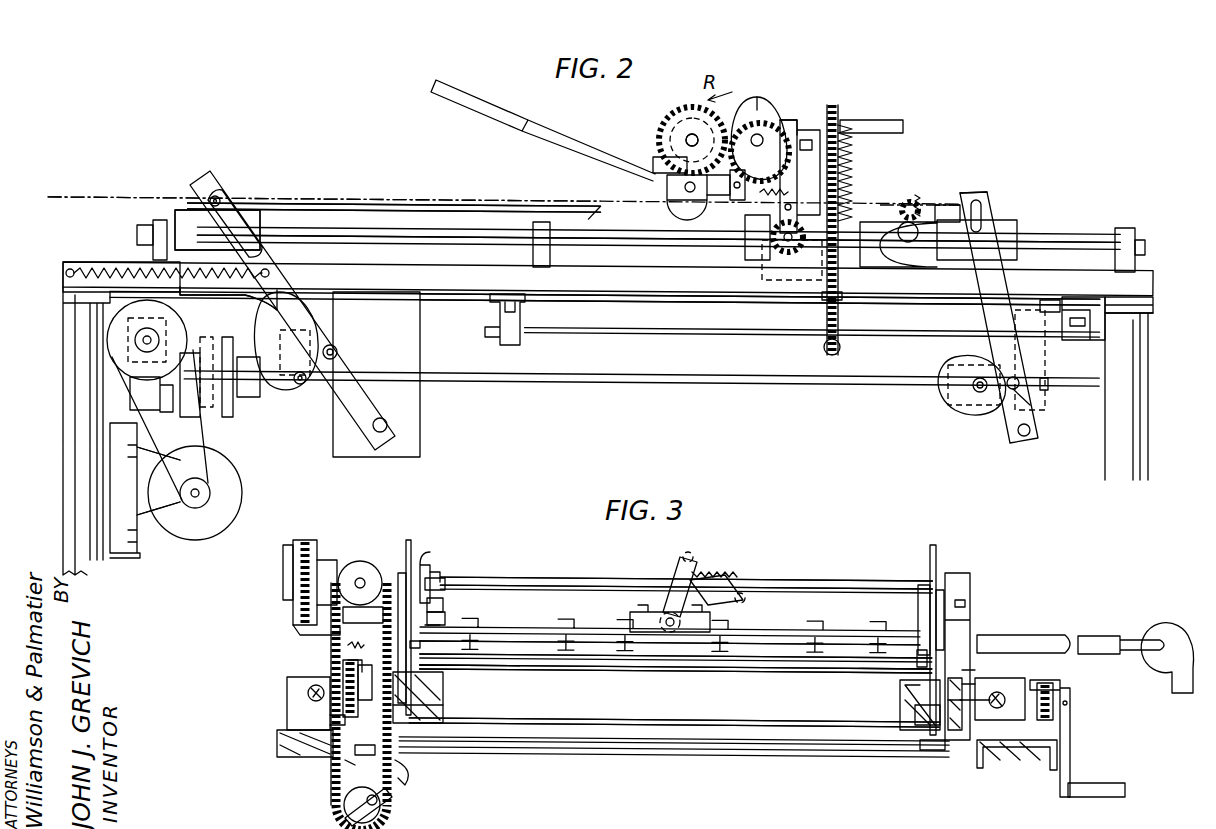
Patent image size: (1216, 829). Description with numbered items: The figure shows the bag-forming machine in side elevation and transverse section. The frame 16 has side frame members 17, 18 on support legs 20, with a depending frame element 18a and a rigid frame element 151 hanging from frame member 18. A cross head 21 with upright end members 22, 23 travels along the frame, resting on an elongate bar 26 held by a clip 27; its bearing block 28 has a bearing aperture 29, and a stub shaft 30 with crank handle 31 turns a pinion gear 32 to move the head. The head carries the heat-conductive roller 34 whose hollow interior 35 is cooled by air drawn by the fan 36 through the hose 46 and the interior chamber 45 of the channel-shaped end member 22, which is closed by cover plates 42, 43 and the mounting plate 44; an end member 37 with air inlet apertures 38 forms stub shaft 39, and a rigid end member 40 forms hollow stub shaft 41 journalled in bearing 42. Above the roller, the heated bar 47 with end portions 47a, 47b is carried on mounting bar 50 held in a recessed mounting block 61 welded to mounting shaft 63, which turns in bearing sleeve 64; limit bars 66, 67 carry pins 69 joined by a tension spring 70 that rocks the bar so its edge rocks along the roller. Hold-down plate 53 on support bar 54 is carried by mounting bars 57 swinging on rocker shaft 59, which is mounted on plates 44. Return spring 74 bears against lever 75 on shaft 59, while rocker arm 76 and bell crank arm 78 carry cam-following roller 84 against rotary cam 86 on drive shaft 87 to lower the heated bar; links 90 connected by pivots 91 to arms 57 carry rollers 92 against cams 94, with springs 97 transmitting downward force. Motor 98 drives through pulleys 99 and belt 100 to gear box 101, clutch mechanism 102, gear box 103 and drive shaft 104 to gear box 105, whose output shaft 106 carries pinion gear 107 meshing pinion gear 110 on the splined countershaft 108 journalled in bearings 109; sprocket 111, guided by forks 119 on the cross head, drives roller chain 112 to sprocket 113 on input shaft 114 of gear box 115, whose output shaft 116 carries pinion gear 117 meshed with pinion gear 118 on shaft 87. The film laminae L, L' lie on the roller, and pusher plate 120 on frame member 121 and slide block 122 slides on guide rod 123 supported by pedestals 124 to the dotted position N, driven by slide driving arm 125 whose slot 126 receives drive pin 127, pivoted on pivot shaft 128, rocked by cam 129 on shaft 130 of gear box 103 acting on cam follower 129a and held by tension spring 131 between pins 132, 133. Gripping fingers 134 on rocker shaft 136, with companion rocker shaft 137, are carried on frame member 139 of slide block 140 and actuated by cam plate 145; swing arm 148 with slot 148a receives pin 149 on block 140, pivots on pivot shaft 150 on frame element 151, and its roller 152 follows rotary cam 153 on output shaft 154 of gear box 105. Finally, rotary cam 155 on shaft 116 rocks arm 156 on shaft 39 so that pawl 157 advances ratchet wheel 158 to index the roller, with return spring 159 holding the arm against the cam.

In FIG. 2, the frame 16 is at (1163, 308).
In FIG. 3, the side frame member 17 is at (985, 766).
In FIG. 2, the side frame member 18 is at (640, 278).
In FIG. 3, the side frame member 18 is at (278, 745).
In FIG. 2, the depending frame element 18a is at (420, 400).
In FIG. 2, the support legs 20 is at (78, 412).
In FIG. 3, the cross head 21 is at (666, 752).
In FIG. 3, the upright end member 22 is at (950, 750).
In FIG. 3, the upright end member 23 is at (373, 682).
In FIG. 3, the elongate bar 26 is at (366, 744).
In FIG. 3, the clip 27 is at (352, 771).
In FIG. 3, the bearing block 28 is at (1022, 684).
In FIG. 3, the bearing aperture 29 is at (1003, 694).
In FIG. 3, the stub shaft 30 is at (1032, 705).
In FIG. 3, the crank handle 31 is at (1092, 792).
In FIG. 3, the pinion gear 32 is at (1050, 686).
In FIG. 3, the cylindrical roller 34 is at (674, 712).
In FIG. 3, the hollow interior 35 is at (900, 706).
In FIG. 3, the fan 36 is at (1188, 640).
In FIG. 3, the end member 37 is at (440, 697).
In FIG. 3, the air inlet apertures 38 is at (440, 712).
In FIG. 2, the stub shaft 39 is at (772, 237).
In FIG. 3, the stub shaft 39 is at (343, 680).
In FIG. 3, the rigid end member 40 is at (925, 727).
In FIG. 3, the hollow stub shaft 41 is at (970, 701).
In FIG. 3, the bearing 42 is at (956, 678).
In FIG. 3, the cover plate 43 is at (976, 669).
In FIG. 2, the mounting plate 44 is at (655, 165).
In FIG. 3, the mounting plate 44 is at (998, 624).
In FIG. 3, the interior chamber 45 is at (976, 683).
In FIG. 3, the air conduit 46 is at (1094, 639).
In FIG. 3, the heated bar 47 is at (692, 666).
In FIG. 3, the end portion 47a is at (872, 672).
In FIG. 3, the end portion 47b is at (456, 662).
In FIG. 3, the mounting bar 50 is at (842, 637).
In FIG. 3, the hold-down plate 53 is at (596, 669).
In FIG. 3, the support bar 54 is at (776, 670).
In FIG. 2, the mounting bar 57 is at (705, 196).
In FIG. 3, the mounting bar 57 is at (918, 656).
In FIG. 2, the rocker shaft 59 is at (675, 189).
In FIG. 3, the recessed mounting block 61 is at (628, 620).
In FIG. 3, the mounting shaft 63 is at (680, 630).
In FIG. 3, the tubular bearing sleeve 64 is at (658, 630).
In FIG. 3, the limit bar 66 is at (672, 580).
In FIG. 3, the limit bar 67 is at (738, 582).
In FIG. 3, the pins 69 is at (689, 555).
In FIG. 3, the tension spring 70 is at (708, 570).
In FIG. 2, the return spring 74 is at (850, 158).
In FIG. 2, the lever 75 is at (896, 121).
In FIG. 3, the rocker arm 76 is at (436, 626).
In FIG. 3, the bell crank arm 78 is at (442, 604).
In FIG. 3, the cam-following roller 84 is at (440, 583).
In FIG. 3, the rotary cam 86 is at (436, 572).
In FIG. 2, the drive shaft 87 is at (694, 146).
In FIG. 3, the drive shaft 87 is at (832, 576).
In FIG. 2, the cam roller-mounting link 90 is at (733, 200).
In FIG. 3, the cam roller-mounting link 90 is at (431, 560).
In FIG. 3, the pivot 91 is at (420, 645).
In FIG. 3, the cam following roller 92 is at (400, 572).
In FIG. 3, the cam 94 is at (411, 546).
In FIG. 3, the spring 97 is at (446, 615).
In FIG. 2, the motor 98 is at (238, 472).
In FIG. 2, the pulleys 99 is at (148, 345).
In FIG. 2, the belt 100 is at (200, 416).
In FIG. 2, the gear box 101 is at (152, 410).
In FIG. 2, the clutch mechanism 102 is at (205, 326).
In FIG. 2, the second gear box 103 is at (243, 386).
In FIG. 2, the elongate drive shaft 104 is at (718, 380).
In FIG. 2, the gear box 105 is at (965, 415).
In FIG. 2, the output drive shaft 106 is at (1049, 384).
In FIG. 2, the pinion gear 107 is at (1045, 365).
In FIG. 2, the countershaft 108 is at (710, 330).
In FIG. 2, the bearings 109 is at (505, 342).
In FIG. 2, the pinion gear 110 is at (1046, 345).
In FIG. 2, the sprocket 111 is at (824, 343).
In FIG. 3, the sprocket 111 is at (384, 812).
In FIG. 2, the roller chain 112 is at (820, 297).
In FIG. 3, the roller chain 112 is at (330, 780).
In FIG. 2, the sprocket 113 is at (839, 118).
In FIG. 3, the sprocket 113 is at (386, 556).
In FIG. 3, the input drive shaft 114 is at (362, 578).
In FIG. 3, the gear box 115 is at (333, 560).
In FIG. 2, the output drive shaft 116 is at (760, 139).
In FIG. 3, the output drive shaft 116 is at (292, 588).
In FIG. 2, the pinion gear 117 is at (788, 118).
In FIG. 2, the pinion gear 118 is at (672, 112).
In FIG. 2, the forks 119 is at (843, 318).
In FIG. 3, the forks 119 is at (404, 774).
In FIG. 2, the pusher plate 120 is at (583, 203).
In FIG. 2, the right angular frame member 121 is at (400, 196).
In FIG. 2, the slide block 122 is at (190, 206).
In FIG. 2, the guide rod 123 is at (392, 237).
In FIG. 3, the guide rod 123 is at (308, 693).
In FIG. 2, the mounting pedestals 124 is at (155, 222).
In FIG. 3, the mounting pedestals 124 is at (290, 708).
In FIG. 2, the slide driving arm 125 is at (290, 285).
In FIG. 2, the elongate slot 126 is at (240, 206).
In FIG. 2, the drive pin 127 is at (207, 186).
In FIG. 2, the pivot shaft 128 is at (381, 432).
In FIG. 2, the cam 129 is at (265, 340).
In FIG. 2, the cam follower 129a is at (340, 351).
In FIG. 2, the right angular drive shaft 130 is at (300, 386).
In FIG. 2, the tension spring 131 is at (135, 268).
In FIG. 2, the pin 132 is at (66, 273).
In FIG. 2, the pin 133 is at (272, 270).
In FIG. 2, the film-gripping fingers 134 is at (903, 205).
In FIG. 2, the rocker shaft 136 is at (913, 200).
In FIG. 2, the rocker shaft 137 is at (919, 232).
In FIG. 2, the elongate frame member 139 is at (945, 204).
In FIG. 2, the slide block 140 is at (1012, 222).
In FIG. 2, the cam plate 145 is at (878, 262).
In FIG. 2, the swing arm 148 is at (1002, 284).
In FIG. 2, the slot 148a is at (976, 194).
In FIG. 2, the pin 149 is at (985, 210).
In FIG. 2, the pivot shaft 150 is at (1025, 440).
In FIG. 2, the rigid frame element 151 is at (1036, 402).
In FIG. 3, the rigid frame element 151 is at (369, 664).
In FIG. 2, the cam-following roller 152 is at (1022, 385).
In FIG. 2, the rotary cam 153 is at (935, 365).
In FIG. 2, the output drive shaft 154 is at (972, 388).
In FIG. 2, the rotary cam 155 is at (756, 98).
In FIG. 3, the rotary cam 155 is at (284, 548).
In FIG. 2, the oscillatable arm 156 is at (797, 122).
In FIG. 3, the oscillatable arm 156 is at (295, 625).
In FIG. 2, the pawl 157 is at (790, 204).
In FIG. 2, the ratchet wheel 158 is at (803, 237).
In FIG. 3, the ratchet wheel 158 is at (336, 722).
In FIG. 2, the return spring 159 is at (775, 202).
In FIG. 3, the return spring 159 is at (370, 645).
In FIG. 2, the film lamina L is at (476, 213).
In FIG. 2, the film lamina L' is at (482, 188).
In FIG. 2, the dotted line position N is at (880, 205).